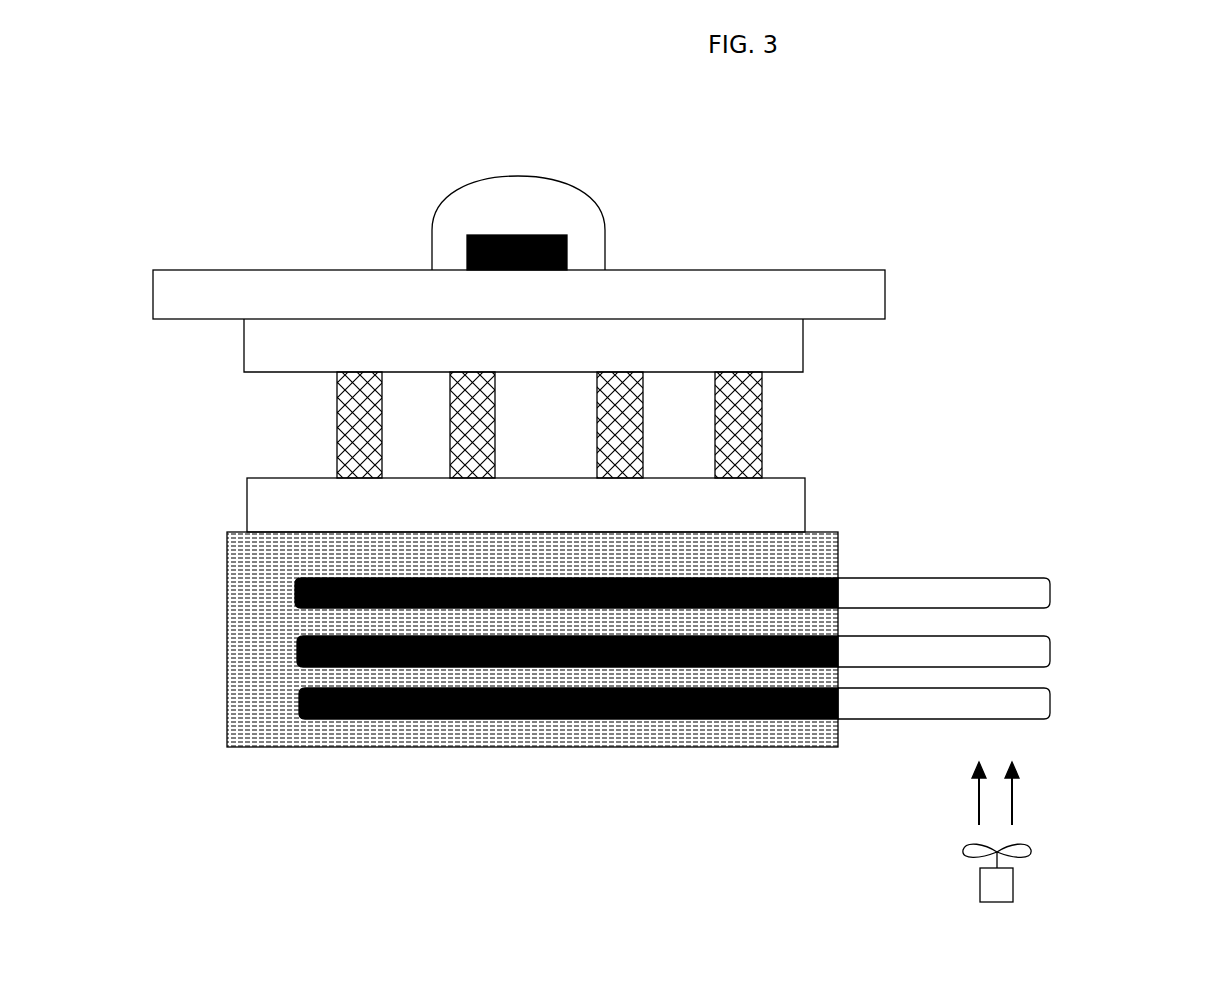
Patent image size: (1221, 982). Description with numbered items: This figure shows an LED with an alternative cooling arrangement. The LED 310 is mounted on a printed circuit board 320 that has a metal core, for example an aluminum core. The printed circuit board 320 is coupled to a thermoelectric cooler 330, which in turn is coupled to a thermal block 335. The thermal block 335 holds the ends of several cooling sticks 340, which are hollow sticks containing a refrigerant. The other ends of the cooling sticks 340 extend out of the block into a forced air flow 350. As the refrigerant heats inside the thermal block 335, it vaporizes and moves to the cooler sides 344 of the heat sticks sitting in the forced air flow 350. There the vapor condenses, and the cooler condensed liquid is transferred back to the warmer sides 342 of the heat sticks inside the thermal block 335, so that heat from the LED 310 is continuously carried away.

The LED 310 is at (583, 203).
The printed circuit board 320 is at (857, 293).
The thermoelectric cooler 330 is at (808, 512).
The thermal block 335 is at (227, 563).
The cooling sticks 340 is at (719, 693).
The warmer sides of the heat sticks 342 is at (447, 717).
The cooler sides of the heat sticks 344 is at (917, 705).
The forced air flow 350 is at (1015, 800).